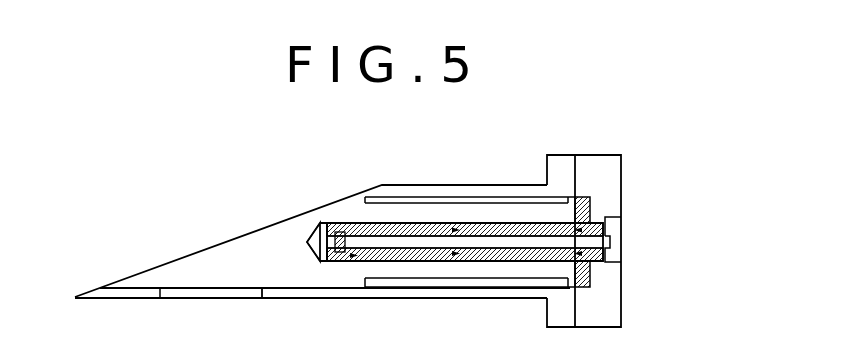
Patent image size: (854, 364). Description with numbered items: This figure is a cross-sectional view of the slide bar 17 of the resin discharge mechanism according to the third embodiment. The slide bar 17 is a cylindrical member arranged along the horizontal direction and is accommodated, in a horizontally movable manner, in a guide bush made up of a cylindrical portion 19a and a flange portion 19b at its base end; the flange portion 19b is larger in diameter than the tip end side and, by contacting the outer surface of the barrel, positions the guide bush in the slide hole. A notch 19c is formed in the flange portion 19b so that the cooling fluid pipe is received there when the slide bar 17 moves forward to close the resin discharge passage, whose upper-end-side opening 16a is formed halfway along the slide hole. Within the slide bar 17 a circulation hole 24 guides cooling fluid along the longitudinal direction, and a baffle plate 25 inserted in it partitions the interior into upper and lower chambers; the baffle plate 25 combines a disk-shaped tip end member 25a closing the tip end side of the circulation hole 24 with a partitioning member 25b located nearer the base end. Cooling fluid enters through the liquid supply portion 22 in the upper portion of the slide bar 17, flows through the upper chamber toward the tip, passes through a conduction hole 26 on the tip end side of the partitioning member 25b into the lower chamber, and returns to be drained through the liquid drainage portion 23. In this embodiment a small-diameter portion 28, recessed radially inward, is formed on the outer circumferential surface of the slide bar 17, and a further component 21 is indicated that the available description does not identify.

The cylindrical portion 19a is at (455, 186).
The flange portion 19b is at (557, 158).
The notch 19c is at (598, 162).
The upper-end-side opening 16a is at (263, 290).
The slide bar 17 is at (407, 278).
The small-diameter portion 28 is at (410, 197).
The conduction hole 26 is at (348, 222).
The liquid supply portion 22 is at (583, 205).
The liquid drainage portion 23 is at (585, 283).
The pipe assembly 21 is at (519, 255).
The circulation hole 24 is at (607, 228).
The baffle plate 25 is at (493, 255).
The tip end member 25a is at (338, 258).
The partitioning member 25b is at (505, 250).